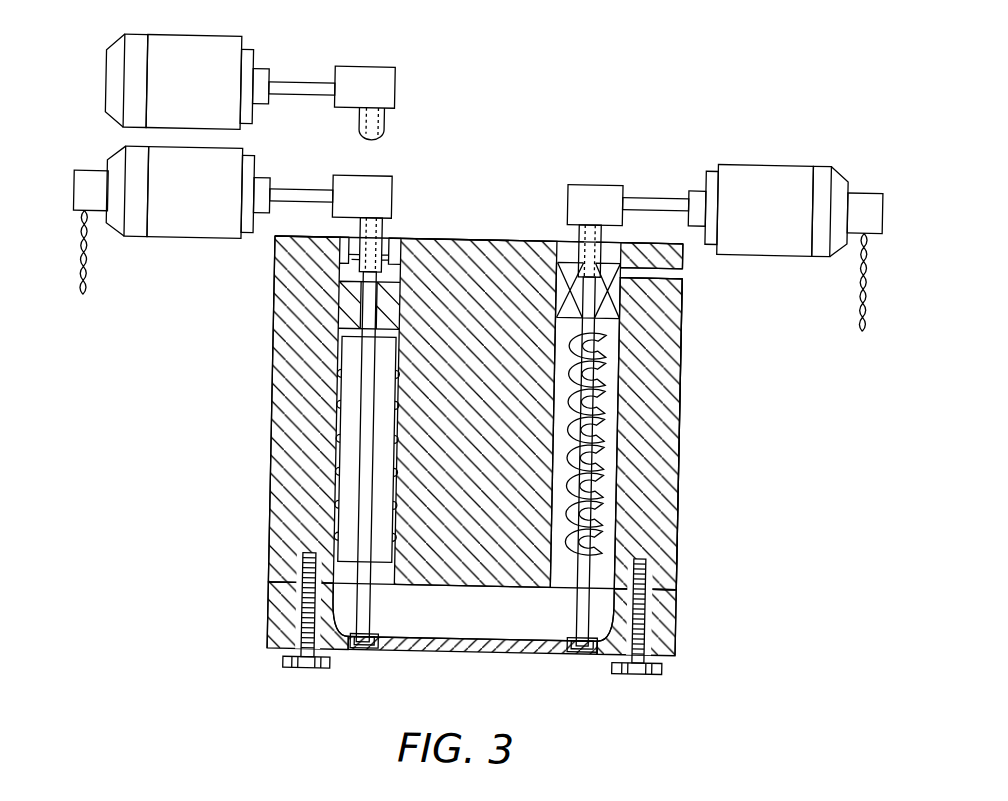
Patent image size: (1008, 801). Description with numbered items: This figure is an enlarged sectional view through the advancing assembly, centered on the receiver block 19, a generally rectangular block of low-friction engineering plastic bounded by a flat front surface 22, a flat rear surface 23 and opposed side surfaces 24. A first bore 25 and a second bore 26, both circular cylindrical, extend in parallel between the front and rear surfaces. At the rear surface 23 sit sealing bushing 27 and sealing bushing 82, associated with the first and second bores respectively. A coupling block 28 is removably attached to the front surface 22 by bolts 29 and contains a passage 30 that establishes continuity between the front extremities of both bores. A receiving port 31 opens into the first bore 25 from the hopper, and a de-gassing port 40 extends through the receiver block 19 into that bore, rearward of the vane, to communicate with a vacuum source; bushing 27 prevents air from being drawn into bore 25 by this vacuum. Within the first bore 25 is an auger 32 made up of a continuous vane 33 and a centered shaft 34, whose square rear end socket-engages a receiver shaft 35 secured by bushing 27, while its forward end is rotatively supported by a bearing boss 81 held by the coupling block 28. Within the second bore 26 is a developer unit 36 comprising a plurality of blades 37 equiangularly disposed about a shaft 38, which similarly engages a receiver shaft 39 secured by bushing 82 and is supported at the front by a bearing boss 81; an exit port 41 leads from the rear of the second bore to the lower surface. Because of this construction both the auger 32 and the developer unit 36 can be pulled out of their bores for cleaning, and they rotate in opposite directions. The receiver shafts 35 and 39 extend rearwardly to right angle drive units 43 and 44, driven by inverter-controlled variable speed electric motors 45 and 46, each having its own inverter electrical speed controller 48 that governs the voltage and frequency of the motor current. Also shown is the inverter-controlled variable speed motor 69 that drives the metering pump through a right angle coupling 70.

The receiver block 19 is at (268, 456).
The front surface 22 is at (686, 592).
The rear surface 23 is at (484, 238).
The side surfaces 24 is at (278, 563).
The first bore 25 is at (626, 390).
The second bore 26 is at (344, 360).
The sealing bushing 27 is at (572, 236).
The coupling block 28 is at (691, 632).
The bolts 29 is at (296, 666).
The passage 30 is at (481, 617).
The receiving port 31 is at (660, 290).
The auger 32 is at (627, 451).
The continuous vane 33 is at (562, 435).
The centered shaft 34 is at (555, 280).
The receiver shaft 35 is at (600, 232).
The developer unit 36 is at (393, 397).
The blades 37 is at (398, 447).
The shaft 38 is at (372, 302).
The receiver shaft 39 is at (383, 228).
The de-gassing port 40 is at (682, 266).
The exit port 41 is at (352, 318).
The right angle drive unit 43 is at (582, 209).
The right angle drive unit 44 is at (349, 205).
The electric motor 45 is at (744, 208).
The electric motor 46 is at (169, 199).
The inverter electrical speed controller 48 is at (90, 174).
The variable speed motor 69 is at (170, 86).
The right angle coupling 70 is at (390, 65).
The bearing boss 81 is at (393, 648).
The sealing bushing 82 is at (395, 252).